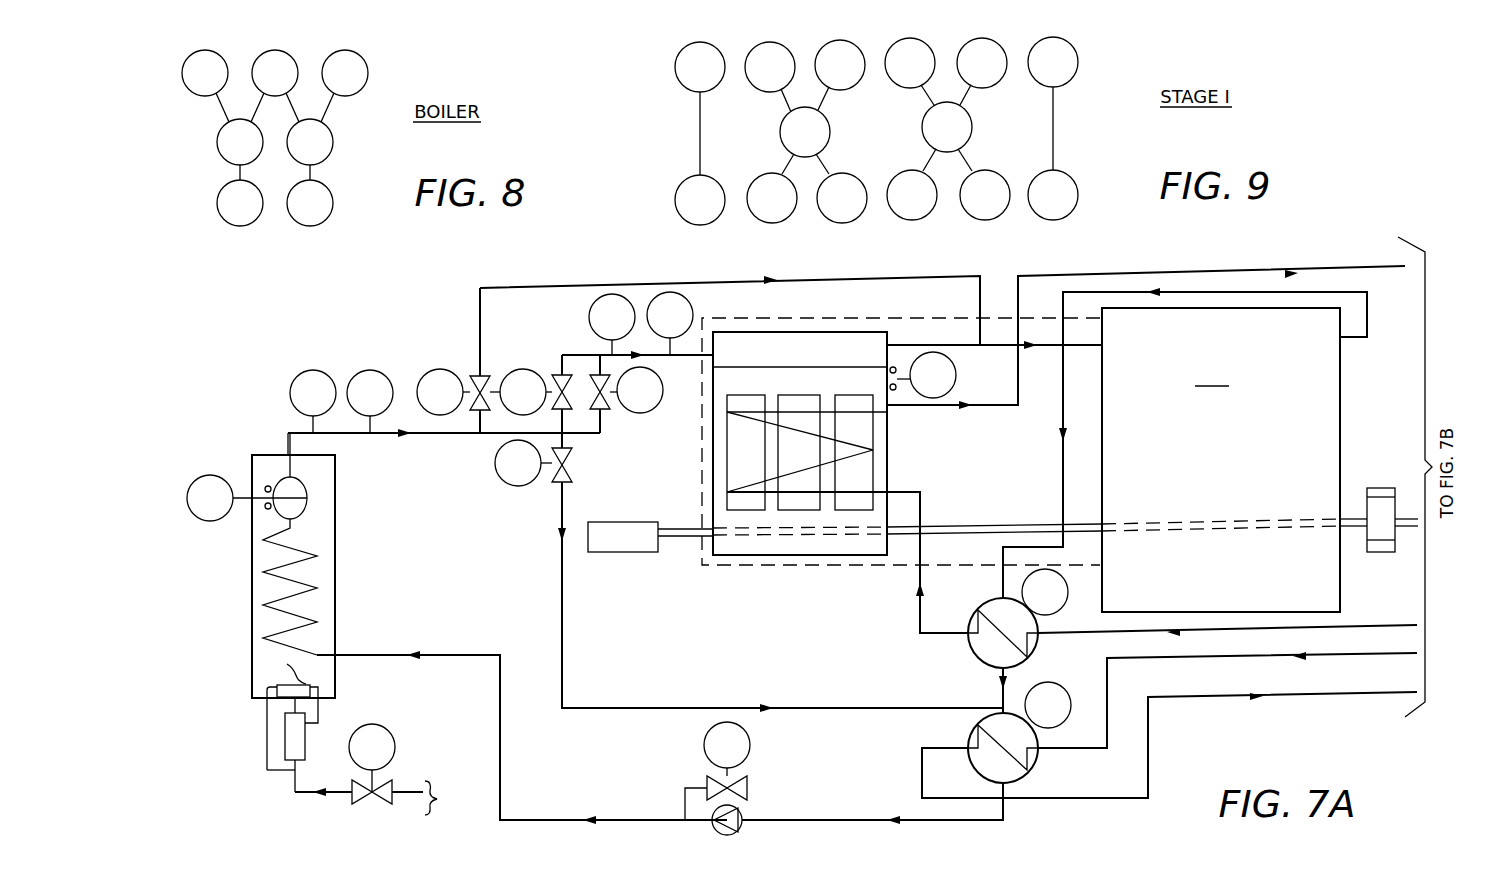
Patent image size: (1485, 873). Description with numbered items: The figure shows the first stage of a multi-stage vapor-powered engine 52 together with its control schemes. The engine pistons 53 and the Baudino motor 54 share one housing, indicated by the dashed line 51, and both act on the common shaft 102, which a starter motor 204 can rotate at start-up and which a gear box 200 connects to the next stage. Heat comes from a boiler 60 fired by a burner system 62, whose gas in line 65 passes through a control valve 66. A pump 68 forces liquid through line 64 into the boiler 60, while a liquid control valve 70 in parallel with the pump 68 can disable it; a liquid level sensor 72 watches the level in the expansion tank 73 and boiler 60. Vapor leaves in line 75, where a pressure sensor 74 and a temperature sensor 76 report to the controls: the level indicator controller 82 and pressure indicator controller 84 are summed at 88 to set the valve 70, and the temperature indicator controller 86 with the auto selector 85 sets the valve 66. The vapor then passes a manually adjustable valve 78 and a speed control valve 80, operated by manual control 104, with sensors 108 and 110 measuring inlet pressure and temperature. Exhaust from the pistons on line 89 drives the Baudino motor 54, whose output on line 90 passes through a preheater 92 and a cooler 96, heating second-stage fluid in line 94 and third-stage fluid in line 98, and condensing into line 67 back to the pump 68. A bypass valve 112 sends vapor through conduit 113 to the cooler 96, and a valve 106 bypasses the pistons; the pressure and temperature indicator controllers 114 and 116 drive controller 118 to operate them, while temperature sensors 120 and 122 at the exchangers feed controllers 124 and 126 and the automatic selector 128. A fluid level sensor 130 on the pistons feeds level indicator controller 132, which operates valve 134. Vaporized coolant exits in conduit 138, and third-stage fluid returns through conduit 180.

In FIG. 7A, the dashed line 51 is at (829, 570).
In FIG. 7A, the engine 52 is at (1206, 259).
In FIG. 7A, the engine pistons 53 is at (858, 316).
In FIG. 7A, the Baudino motor 54 is at (1221, 460).
In FIG. 7A, the boiler 60 is at (250, 635).
In FIG. 7A, the burner system 62 is at (268, 785).
In FIG. 7A, the line 64 is at (305, 561).
In FIG. 7A, the line 65 is at (408, 800).
In FIG. 8, the control valve 66 is at (310, 226).
In FIG. 7A, the control valve 66 is at (395, 746).
In FIG. 7A, the line 67 is at (840, 820).
In FIG. 7A, the pump 68 is at (689, 809).
In FIG. 8, the liquid control valve 70 is at (234, 228).
In FIG. 7A, the liquid control valve 70 is at (705, 743).
In FIG. 7A, the liquid level sensor 72 is at (226, 474).
In FIG. 7A, the expansion tank 73 is at (312, 505).
In FIG. 7A, the pressure sensor 74 is at (299, 374).
In FIG. 7A, the line 75 is at (450, 438).
In FIG. 7A, the temperature sensor 76 is at (365, 373).
In FIG. 7A, the manually adjustable valve 78 is at (527, 372).
In FIG. 9, the speed control valve 80 is at (690, 222).
In FIG. 7A, the speed control valve 80 is at (658, 410).
In FIG. 8, the fluid level indicator controller 82 is at (222, 54).
In FIG. 8, the pressure indicator controller 84 is at (292, 54).
In FIG. 8, the auto selector 85 is at (333, 148).
In FIG. 8, the temperature indicator controller 86 is at (362, 34).
In FIG. 8, the summation 88 is at (222, 152).
In FIG. 7A, the line 89 is at (901, 345).
In FIG. 7A, the line 90 is at (1063, 415).
In FIG. 7A, the preheater 92 is at (970, 653).
In FIG. 7A, the line 94 is at (1362, 626).
In FIG. 7A, the cooler 96 is at (968, 738).
In FIG. 7A, the line 98 is at (1256, 660).
In FIG. 7A, the shaft 102 is at (1008, 524).
In FIG. 9, the manual control 104 is at (706, 44).
In FIG. 9, the valve 106 is at (766, 222).
In FIG. 7A, the valve 106 is at (433, 373).
In FIG. 7A, the pressure sensor 108 is at (590, 322).
In FIG. 7A, the temperature sensor 110 is at (691, 305).
In FIG. 9, the bypass valve 112 is at (835, 222).
In FIG. 7A, the bypass valve 112 is at (505, 481).
In FIG. 7A, the conduit 113 is at (562, 581).
In FIG. 9, the pressure indicator controller 114 is at (783, 44).
In FIG. 9, the temperature indicator controller 116 is at (858, 42).
In FIG. 9, the controller 118 is at (830, 135).
In FIG. 7A, the sensor 120 is at (1068, 592).
In FIG. 7A, the temperature sensor 122 is at (1063, 689).
In FIG. 9, the temperature indicator controller 124 is at (934, 40).
In FIG. 9, the temperature indicator controller 126 is at (1004, 40).
In FIG. 9, the automatic selector 128 is at (972, 128).
In FIG. 7A, the fluid level sensor 130 is at (957, 385).
In FIG. 9, the level indicator controller 132 is at (1079, 40).
In FIG. 9, the valve 134 is at (1053, 220).
In FIG. 7A, the conduit 138 is at (952, 406).
In FIG. 7A, the conduit 180 is at (1352, 698).
In FIG. 7A, the gear box 200 is at (1378, 488).
In FIG. 7A, the starter motor 204 is at (645, 556).